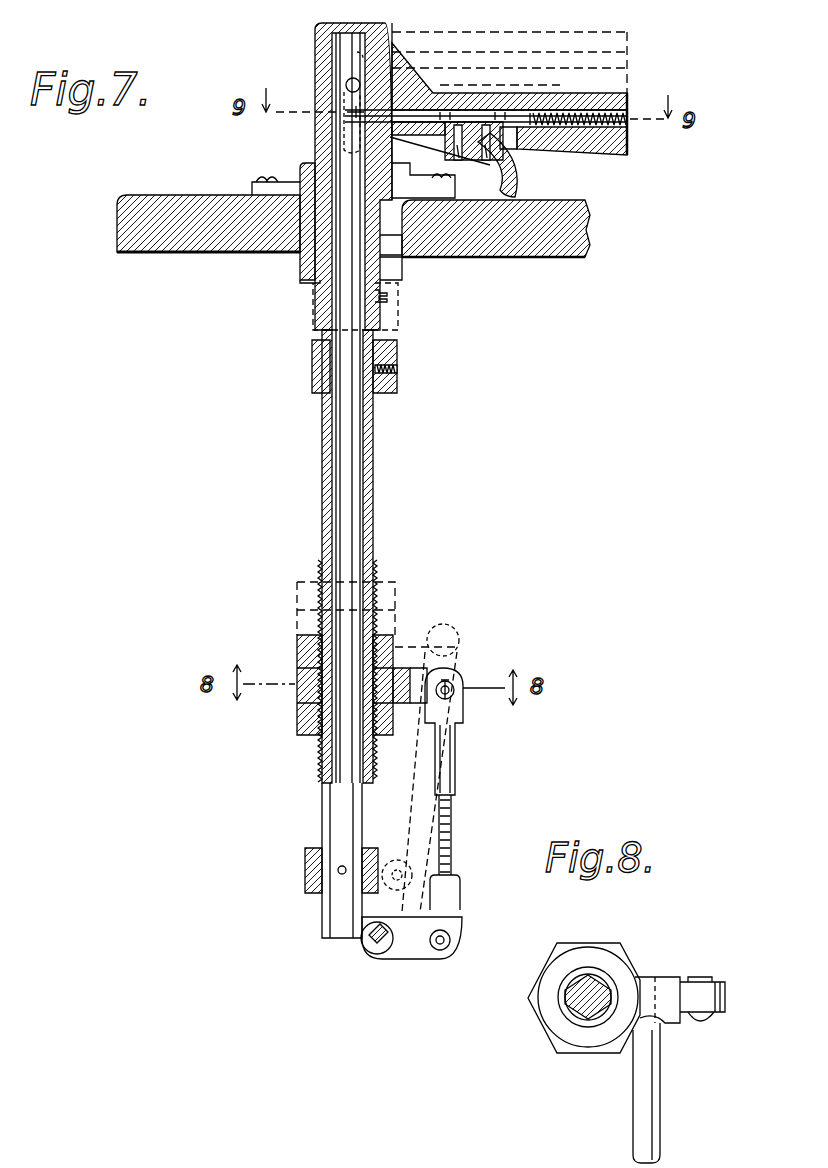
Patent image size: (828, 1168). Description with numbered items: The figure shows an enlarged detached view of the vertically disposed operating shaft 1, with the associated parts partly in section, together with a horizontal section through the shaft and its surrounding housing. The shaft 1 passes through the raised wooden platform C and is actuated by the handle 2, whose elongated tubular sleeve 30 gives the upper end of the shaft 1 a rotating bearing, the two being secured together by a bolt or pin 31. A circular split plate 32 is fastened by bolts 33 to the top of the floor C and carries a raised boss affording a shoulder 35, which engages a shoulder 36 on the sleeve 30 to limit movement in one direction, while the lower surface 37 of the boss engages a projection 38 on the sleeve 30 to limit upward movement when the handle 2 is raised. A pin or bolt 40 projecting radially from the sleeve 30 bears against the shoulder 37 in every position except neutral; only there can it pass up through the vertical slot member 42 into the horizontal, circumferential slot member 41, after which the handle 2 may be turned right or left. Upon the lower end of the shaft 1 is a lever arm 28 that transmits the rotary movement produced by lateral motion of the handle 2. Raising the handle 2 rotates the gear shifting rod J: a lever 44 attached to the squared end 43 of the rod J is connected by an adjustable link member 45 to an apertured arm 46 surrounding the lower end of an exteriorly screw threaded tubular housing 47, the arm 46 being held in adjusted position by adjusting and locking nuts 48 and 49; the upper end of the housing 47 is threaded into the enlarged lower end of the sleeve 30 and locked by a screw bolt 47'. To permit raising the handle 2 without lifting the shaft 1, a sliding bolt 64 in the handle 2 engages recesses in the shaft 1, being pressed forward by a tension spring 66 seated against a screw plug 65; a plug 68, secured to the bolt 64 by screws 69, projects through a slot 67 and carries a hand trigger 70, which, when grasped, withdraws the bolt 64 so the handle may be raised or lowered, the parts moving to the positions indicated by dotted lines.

In FIG. 7, the operating shaft 1 is at (355, 512).
In FIG. 8, the operating shaft 1 is at (575, 1020).
In FIG. 7, the handle 2 is at (567, 102).
In FIG. 7, the lever arm 28 is at (305, 868).
In FIG. 7, the tubular sleeve 30 is at (318, 306).
In FIG. 7, the bolt or pin 31 is at (350, 85).
In FIG. 7, the circular split plate 32 is at (263, 187).
In FIG. 7, the bolts 33 is at (265, 178).
In FIG. 7, the shoulder 35 is at (310, 165).
In FIG. 7, the shoulder 36 is at (398, 158).
In FIG. 7, the lower surface 37 is at (315, 288).
In FIG. 7, the projection 38 is at (398, 345).
In FIG. 7, the pin or bolt 40 is at (392, 298).
In FIG. 7, the upper slot member 41 is at (405, 257).
In FIG. 7, the lower slot member 42 is at (398, 268).
In FIG. 7, the squared end 43 is at (375, 946).
In FIG. 7, the lever 44 is at (412, 958).
In FIG. 7, the adjustable link member 45 is at (445, 888).
In FIG. 8, the adjustable link member 45 is at (722, 985).
In FIG. 7, the apertured arm 46 is at (416, 705).
In FIG. 8, the apertured arm 46 is at (670, 998).
In FIG. 7, the tubular housing 47 is at (392, 659).
In FIG. 8, the tubular housing 47 is at (588, 1031).
In FIG. 7, the screw bolt 47' is at (425, 376).
In FIG. 7, the adjusting and locking nut 48 is at (300, 590).
In FIG. 7, the adjusting and locking nut 49 is at (300, 722).
In FIG. 8, the adjusting and locking nut 49 is at (540, 1000).
In FIG. 7, the sliding bolt 64 is at (515, 112).
In FIG. 7, the screw plug 65 is at (627, 128).
In FIG. 7, the tension spring 66 is at (645, 168).
In FIG. 7, the slot 67 is at (520, 150).
In FIG. 7, the plug 68 is at (458, 135).
In FIG. 7, the screws 69 is at (486, 150).
In FIG. 7, the hand trigger 70 is at (518, 180).
In FIG. 7, the raised platform C is at (165, 242).
In FIG. 7, the gear shifting rod J is at (370, 945).
In FIG. 8, the gear shifting rod J is at (658, 1068).